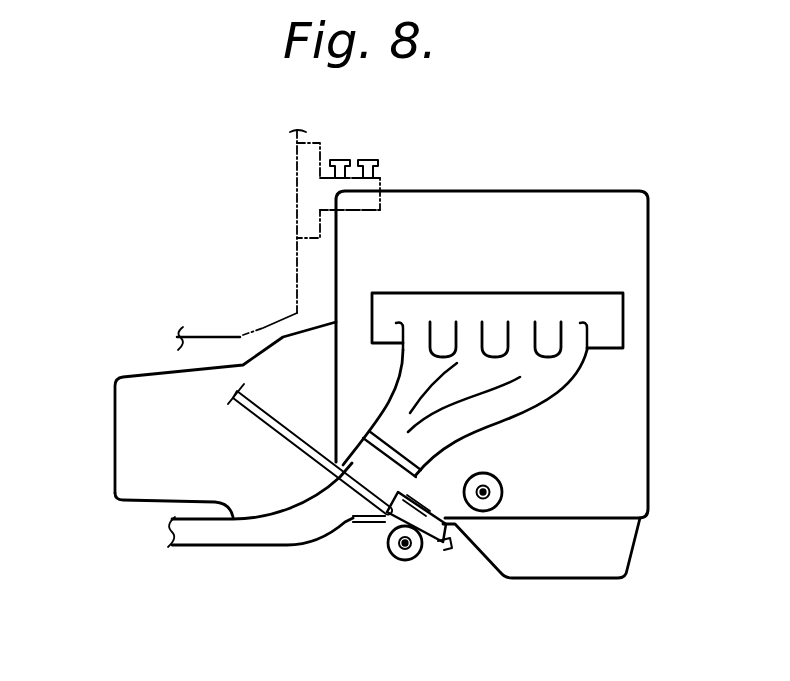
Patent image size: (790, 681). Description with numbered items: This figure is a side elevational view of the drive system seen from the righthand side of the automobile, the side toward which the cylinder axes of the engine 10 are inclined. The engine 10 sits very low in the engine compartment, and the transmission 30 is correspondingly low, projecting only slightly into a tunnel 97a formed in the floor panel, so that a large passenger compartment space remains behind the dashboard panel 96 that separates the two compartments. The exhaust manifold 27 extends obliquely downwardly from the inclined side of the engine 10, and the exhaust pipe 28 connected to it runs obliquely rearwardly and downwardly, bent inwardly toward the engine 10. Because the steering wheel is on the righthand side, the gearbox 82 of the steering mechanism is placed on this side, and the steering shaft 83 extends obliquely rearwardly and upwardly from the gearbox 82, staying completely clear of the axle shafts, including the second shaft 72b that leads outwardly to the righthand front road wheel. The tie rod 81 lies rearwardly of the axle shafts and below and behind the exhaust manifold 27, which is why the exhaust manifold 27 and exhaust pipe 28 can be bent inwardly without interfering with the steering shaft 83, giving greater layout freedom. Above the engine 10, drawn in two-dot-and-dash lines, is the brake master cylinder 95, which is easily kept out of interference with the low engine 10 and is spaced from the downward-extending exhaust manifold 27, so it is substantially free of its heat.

The engine 10 is at (648, 231).
The exhaust manifold 27 is at (503, 403).
The exhaust pipe 28 is at (297, 537).
The transmission 30 is at (122, 452).
The second shaft 72b is at (503, 490).
The tie rod 81 is at (394, 558).
The gearbox 82 is at (420, 503).
The steering shaft 83 is at (284, 430).
The brake master cylinder 95 is at (347, 160).
The dashboard panel 96 is at (297, 262).
The tunnel 97a is at (205, 348).